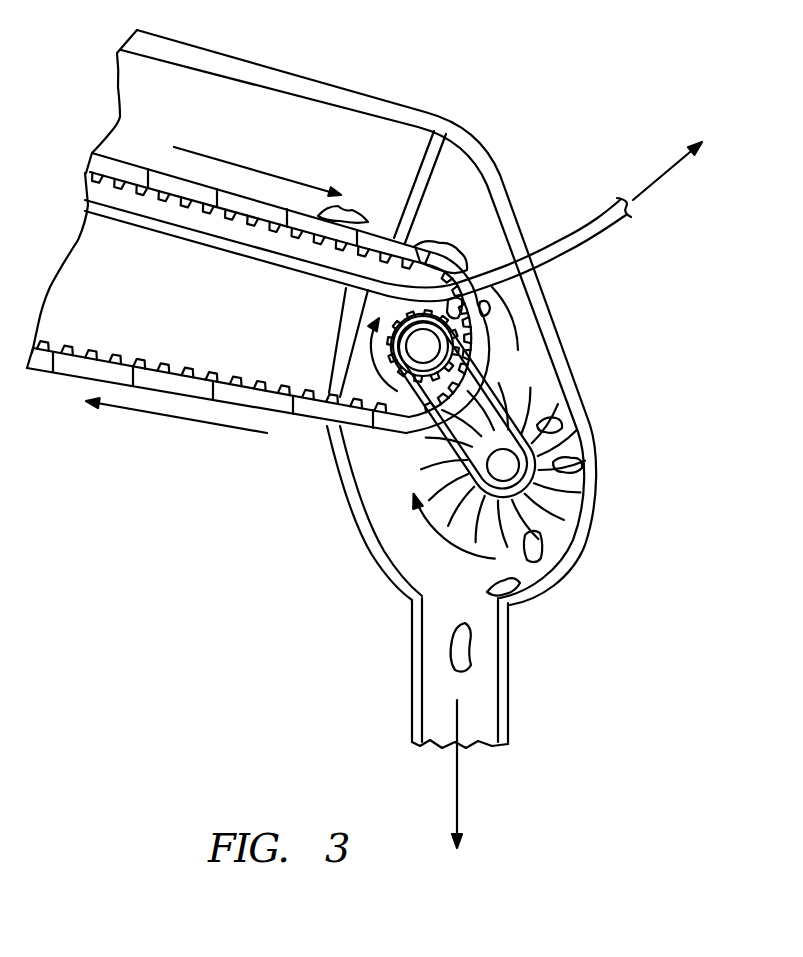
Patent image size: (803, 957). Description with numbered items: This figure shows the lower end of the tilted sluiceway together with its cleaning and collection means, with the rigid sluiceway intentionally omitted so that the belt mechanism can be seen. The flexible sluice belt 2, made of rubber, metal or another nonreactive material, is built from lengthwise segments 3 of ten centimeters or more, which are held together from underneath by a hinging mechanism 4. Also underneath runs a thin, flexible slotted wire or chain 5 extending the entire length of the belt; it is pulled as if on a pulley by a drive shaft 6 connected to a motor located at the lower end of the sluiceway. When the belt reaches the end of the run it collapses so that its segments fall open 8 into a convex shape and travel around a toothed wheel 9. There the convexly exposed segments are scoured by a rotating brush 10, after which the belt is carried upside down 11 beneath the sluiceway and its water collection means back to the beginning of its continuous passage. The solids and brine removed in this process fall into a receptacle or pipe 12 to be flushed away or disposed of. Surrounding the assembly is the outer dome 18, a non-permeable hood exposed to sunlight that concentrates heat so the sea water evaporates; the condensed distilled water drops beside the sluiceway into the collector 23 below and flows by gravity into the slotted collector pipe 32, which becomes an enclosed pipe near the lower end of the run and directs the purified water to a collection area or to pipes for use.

The outer dome 18 is at (300, 77).
The flexible sluice belt 2 is at (113, 168).
The lengthwise segments 3 is at (143, 162).
The slotted wire or chain 5 is at (110, 185).
The hinging mechanism 4 is at (217, 210).
The collector 23 is at (283, 245).
The upside down return run 11 is at (82, 380).
The drive shaft 6 is at (417, 344).
The toothed wheel 9 is at (398, 348).
The fallen open belt segments 8 is at (490, 340).
The rotating brush 10 is at (567, 433).
The receptacle or pipe 12 is at (440, 583).
The slotted collector pipe 32 is at (572, 243).